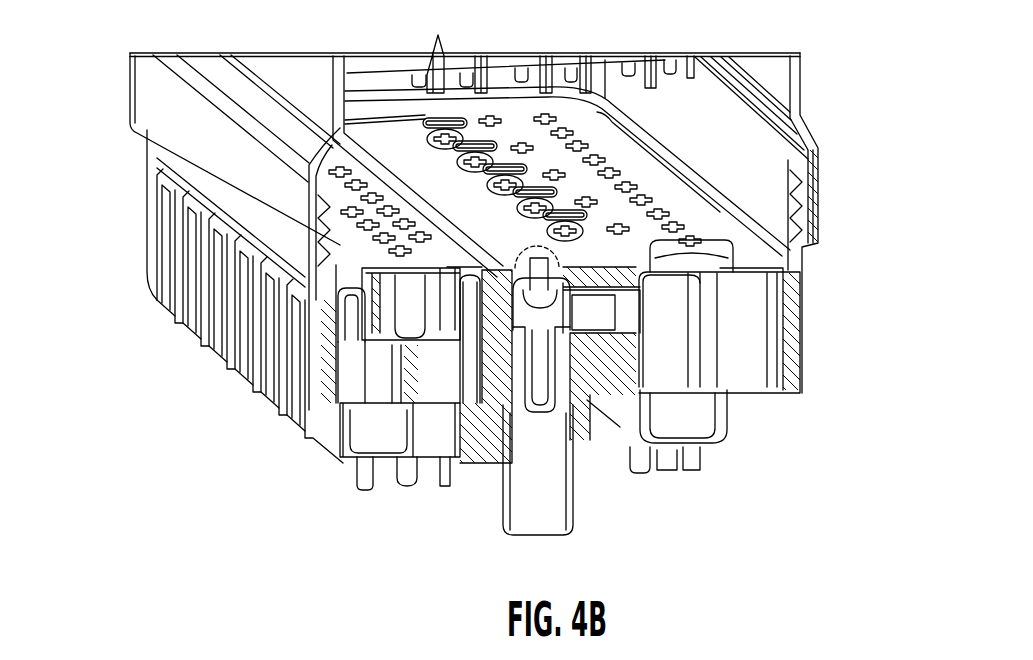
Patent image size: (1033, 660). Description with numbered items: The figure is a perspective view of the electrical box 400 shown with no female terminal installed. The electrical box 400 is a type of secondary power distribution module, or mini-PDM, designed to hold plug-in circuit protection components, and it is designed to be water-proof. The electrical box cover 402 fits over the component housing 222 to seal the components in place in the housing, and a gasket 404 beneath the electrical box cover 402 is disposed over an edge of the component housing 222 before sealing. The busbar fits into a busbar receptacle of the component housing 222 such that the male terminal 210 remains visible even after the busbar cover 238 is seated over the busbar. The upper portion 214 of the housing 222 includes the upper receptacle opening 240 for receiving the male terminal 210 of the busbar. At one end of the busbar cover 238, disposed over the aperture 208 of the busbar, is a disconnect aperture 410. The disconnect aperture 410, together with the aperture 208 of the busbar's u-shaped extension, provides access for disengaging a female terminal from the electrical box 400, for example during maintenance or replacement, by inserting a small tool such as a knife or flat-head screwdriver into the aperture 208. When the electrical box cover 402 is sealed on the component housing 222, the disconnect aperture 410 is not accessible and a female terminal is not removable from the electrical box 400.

The electrical box 400 is at (79, 73).
The electrical box cover 402 is at (143, 103).
The gasket 404 is at (822, 217).
The busbar cover 238 is at (495, 228).
The component housing 222 is at (762, 313).
The aperture 208 is at (530, 270).
The upper portion 214 is at (500, 373).
The male terminal 210 is at (537, 358).
The upper receptacle opening 240 is at (567, 332).
The disconnect aperture 410 is at (633, 270).